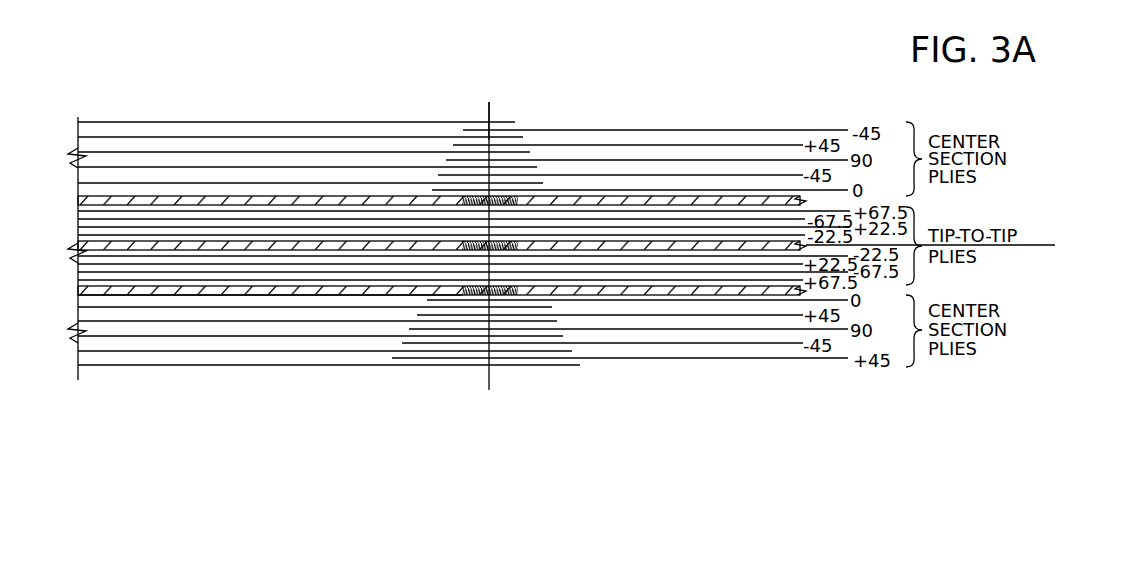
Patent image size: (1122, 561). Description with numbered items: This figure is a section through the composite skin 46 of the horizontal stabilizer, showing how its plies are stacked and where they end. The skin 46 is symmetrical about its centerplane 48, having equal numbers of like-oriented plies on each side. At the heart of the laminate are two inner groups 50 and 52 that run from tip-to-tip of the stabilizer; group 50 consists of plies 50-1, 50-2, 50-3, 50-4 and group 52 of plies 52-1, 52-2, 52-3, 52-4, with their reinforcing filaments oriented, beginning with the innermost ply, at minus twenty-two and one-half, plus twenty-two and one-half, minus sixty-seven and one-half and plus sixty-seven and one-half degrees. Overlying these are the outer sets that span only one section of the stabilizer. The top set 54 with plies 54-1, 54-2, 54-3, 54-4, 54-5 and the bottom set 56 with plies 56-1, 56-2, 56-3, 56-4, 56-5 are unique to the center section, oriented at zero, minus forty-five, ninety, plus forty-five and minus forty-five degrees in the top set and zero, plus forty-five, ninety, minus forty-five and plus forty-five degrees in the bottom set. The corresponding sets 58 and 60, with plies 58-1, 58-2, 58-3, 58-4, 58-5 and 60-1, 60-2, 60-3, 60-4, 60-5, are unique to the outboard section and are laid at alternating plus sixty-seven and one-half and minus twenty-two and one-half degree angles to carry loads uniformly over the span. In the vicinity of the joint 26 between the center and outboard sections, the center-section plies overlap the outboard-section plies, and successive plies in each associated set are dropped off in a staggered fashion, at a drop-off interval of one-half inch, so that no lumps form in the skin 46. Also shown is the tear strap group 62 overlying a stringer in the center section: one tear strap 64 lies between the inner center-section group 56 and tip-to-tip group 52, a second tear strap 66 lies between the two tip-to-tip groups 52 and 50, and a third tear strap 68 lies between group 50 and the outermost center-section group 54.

The joint 26 is at (492, 107).
The skin 46 is at (478, 101).
The centerplane 48 is at (1052, 245).
The inner group of plies 50 is at (527, 137).
The ply 50-1 is at (727, 210).
The ply 50-2 is at (740, 218).
The ply 50-3 is at (752, 227).
The ply 50-4 is at (763, 234).
The inner group of plies 52 is at (530, 356).
The ply 52-1 is at (752, 256).
The ply 52-2 is at (763, 264).
The ply 52-3 is at (772, 272).
The ply 52-4 is at (782, 280).
The outer set of plies 54 is at (676, 107).
The ply 54-1 is at (588, 189).
The ply 54-2 is at (598, 175).
The ply 54-3 is at (606, 162).
The ply 54-4 is at (615, 158).
The ply 54-5 is at (626, 144).
The outer set of plies 56 is at (620, 387).
The ply 56-1 is at (692, 300).
The ply 56-2 is at (683, 315).
The ply 56-3 is at (674, 330).
The ply 56-4 is at (662, 343).
The ply 56-5 is at (650, 359).
The set of plies 58 is at (310, 117).
The ply 58-1 is at (186, 183).
The ply 58-2 is at (195, 167).
The ply 58-3 is at (272, 152).
The ply 58-4 is at (282, 138).
The ply 58-5 is at (291, 123).
The set of plies 60 is at (329, 391).
The ply 60-1 is at (205, 307).
The ply 60-2 is at (214, 321).
The ply 60-3 is at (223, 336).
The ply 60-4 is at (238, 351).
The ply 60-5 is at (248, 365).
The tear strap group 62 is at (371, 302).
The tear strap 64 is at (344, 293).
The tear strap 66 is at (356, 246).
The tear strap 68 is at (380, 200).